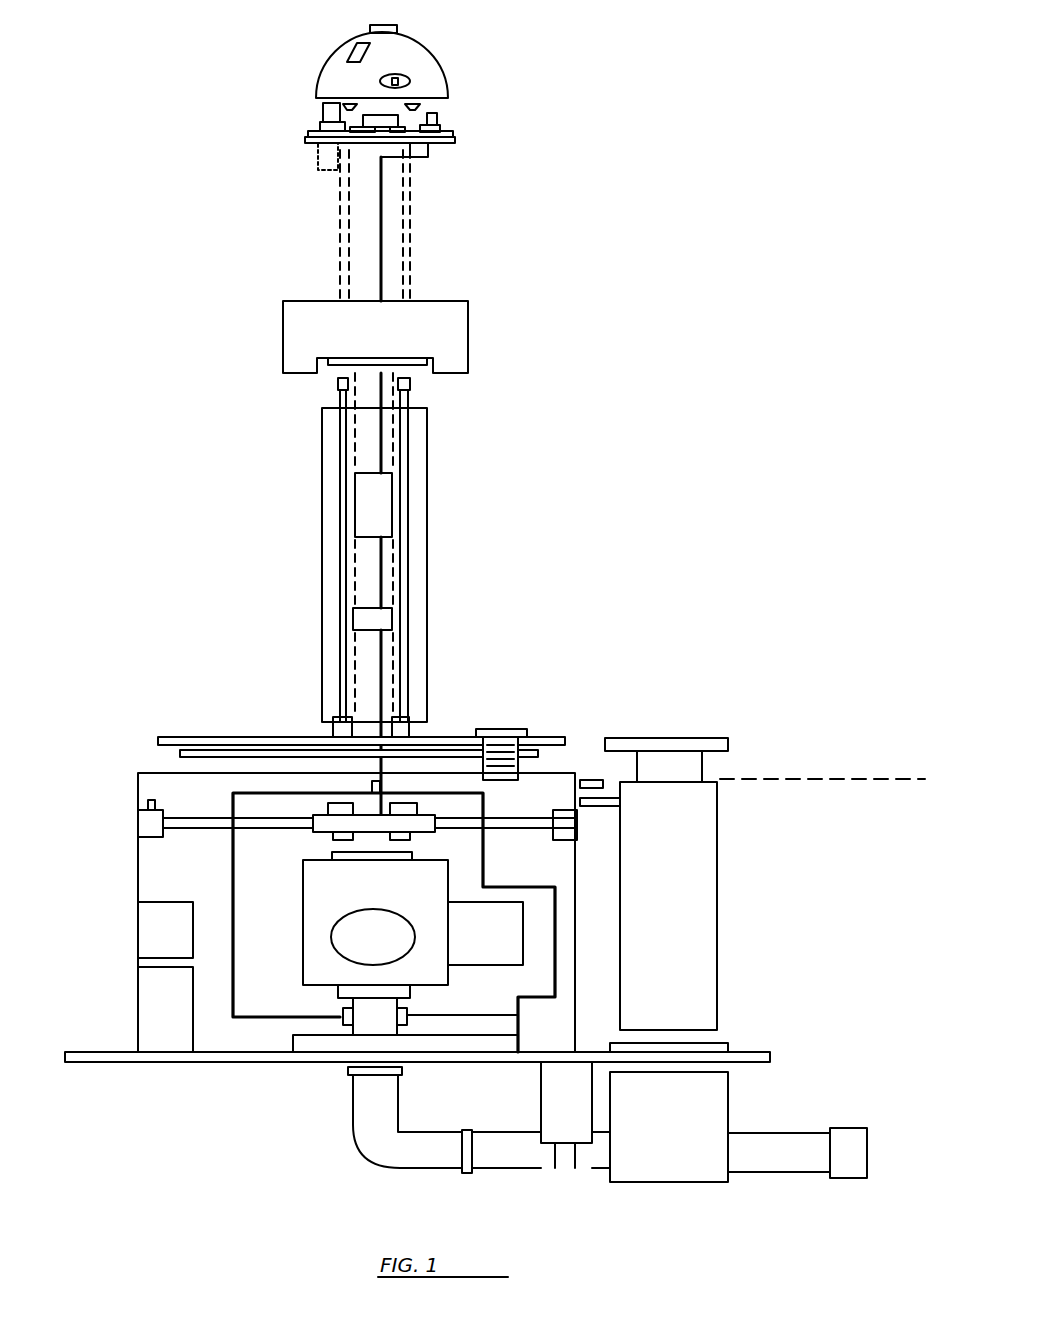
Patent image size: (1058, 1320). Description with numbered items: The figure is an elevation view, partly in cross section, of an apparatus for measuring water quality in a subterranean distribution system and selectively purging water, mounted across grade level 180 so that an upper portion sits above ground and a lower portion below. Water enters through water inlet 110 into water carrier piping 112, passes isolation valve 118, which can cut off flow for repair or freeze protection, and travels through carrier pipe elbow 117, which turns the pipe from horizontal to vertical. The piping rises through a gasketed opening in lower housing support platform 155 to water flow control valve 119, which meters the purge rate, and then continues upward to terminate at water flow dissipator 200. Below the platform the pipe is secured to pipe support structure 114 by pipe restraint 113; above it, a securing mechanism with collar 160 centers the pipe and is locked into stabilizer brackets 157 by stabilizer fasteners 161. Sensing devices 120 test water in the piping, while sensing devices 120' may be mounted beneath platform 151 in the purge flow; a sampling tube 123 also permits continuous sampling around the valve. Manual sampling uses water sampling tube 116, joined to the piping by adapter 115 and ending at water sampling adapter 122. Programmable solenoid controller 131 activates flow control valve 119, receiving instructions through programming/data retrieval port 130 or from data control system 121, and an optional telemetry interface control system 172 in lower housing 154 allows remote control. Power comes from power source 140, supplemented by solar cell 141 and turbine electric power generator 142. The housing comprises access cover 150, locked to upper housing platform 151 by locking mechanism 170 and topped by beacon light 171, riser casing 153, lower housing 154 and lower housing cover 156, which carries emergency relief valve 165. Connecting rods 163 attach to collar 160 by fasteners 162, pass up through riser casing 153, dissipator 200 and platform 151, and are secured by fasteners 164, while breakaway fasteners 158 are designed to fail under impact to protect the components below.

The water inlet 110 is at (840, 1128).
The water carrier piping 112 is at (447, 1157).
The pipe restraint 113 is at (565, 1170).
The pipe support structure 114 is at (541, 1090).
The adapter 115 is at (345, 1012).
The water sampling tube 116 is at (381, 447).
The carrier pipe elbow 117 is at (372, 1122).
The isolation valve 118 is at (708, 1120).
The water flow control valve 119 is at (365, 940).
The sensing devices 120 is at (418, 607).
The sensing devices 120' is at (283, 164).
The data control system 121 is at (160, 930).
The water sampling adapter 122 is at (436, 120).
The sampling tube 123 is at (560, 990).
The programming/data retrieval port 130 is at (322, 134).
The programmable solenoid controller 131 is at (485, 935).
The power source 140 is at (323, 108).
The solar cell 141 is at (350, 54).
The water-powered turbine electric power generator 142 is at (370, 503).
The access cover 150 is at (448, 88).
The upper housing platform 151 is at (430, 148).
The riser casing 153 is at (322, 442).
The lower housing 154 is at (138, 775).
The lower housing support platform 155 is at (102, 1060).
The lower housing cover 156 is at (690, 740).
The stabilizer brackets 157 is at (140, 830).
The breakaway fasteners 158 is at (333, 730).
The collar 160 is at (500, 750).
The stabilizer fasteners/pins 161 is at (148, 804).
The fasteners 162 is at (335, 810).
The connecting rods 163 is at (340, 405).
The fasteners 164 is at (420, 107).
The emergency relief valve 165 is at (500, 746).
The locking mechanism 170 is at (380, 82).
The beacon light 171 is at (398, 27).
The telephone and/or radio telemetry interface control system 172 is at (160, 1033).
The grade level 180 is at (850, 778).
The water flow dissipator 200 is at (468, 335).